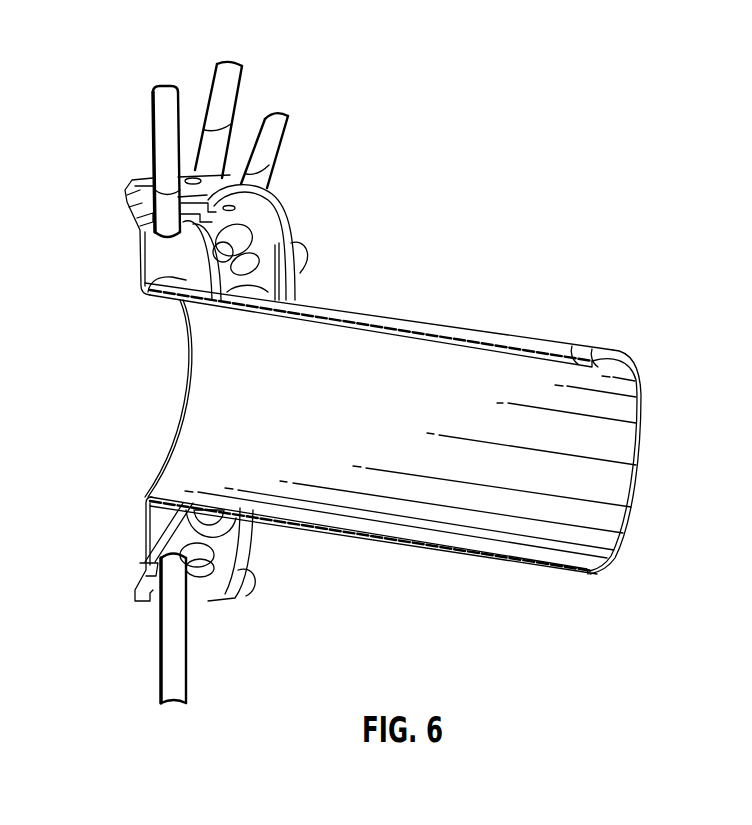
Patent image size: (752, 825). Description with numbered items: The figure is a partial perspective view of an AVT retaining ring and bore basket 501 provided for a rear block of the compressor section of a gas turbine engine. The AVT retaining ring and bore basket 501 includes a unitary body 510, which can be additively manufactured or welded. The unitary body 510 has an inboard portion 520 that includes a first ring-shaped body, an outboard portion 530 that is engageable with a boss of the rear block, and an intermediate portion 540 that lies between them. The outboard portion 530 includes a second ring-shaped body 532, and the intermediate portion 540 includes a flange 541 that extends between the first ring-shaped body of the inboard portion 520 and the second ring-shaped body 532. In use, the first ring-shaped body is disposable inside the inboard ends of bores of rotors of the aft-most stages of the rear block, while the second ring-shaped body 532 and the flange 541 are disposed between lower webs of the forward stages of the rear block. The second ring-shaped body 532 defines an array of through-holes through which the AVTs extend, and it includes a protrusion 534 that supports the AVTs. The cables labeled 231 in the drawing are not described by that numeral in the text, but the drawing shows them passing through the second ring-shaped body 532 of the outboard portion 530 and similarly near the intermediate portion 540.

The cable 231 is at (230, 88).
The AVT retaining ring and bore basket 501 is at (322, 274).
The unitary body 510 is at (543, 348).
The inboard portion 520 is at (427, 333).
The outboard portion 530 is at (277, 213).
The second ring-shaped body 532 is at (147, 181).
The protrusion 534 is at (142, 221).
The intermediate portion 540 is at (146, 518).
The flange 541 is at (242, 569).